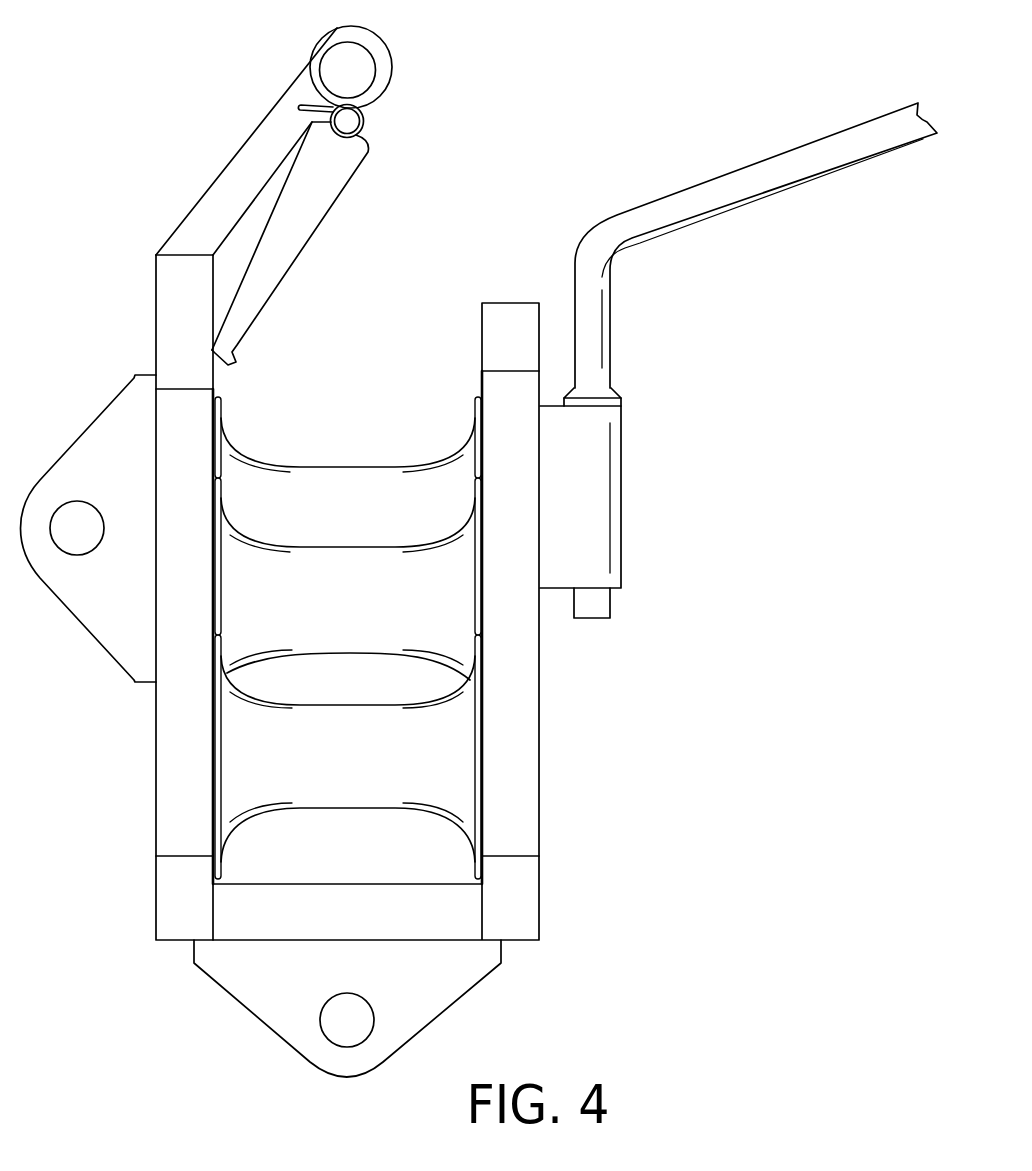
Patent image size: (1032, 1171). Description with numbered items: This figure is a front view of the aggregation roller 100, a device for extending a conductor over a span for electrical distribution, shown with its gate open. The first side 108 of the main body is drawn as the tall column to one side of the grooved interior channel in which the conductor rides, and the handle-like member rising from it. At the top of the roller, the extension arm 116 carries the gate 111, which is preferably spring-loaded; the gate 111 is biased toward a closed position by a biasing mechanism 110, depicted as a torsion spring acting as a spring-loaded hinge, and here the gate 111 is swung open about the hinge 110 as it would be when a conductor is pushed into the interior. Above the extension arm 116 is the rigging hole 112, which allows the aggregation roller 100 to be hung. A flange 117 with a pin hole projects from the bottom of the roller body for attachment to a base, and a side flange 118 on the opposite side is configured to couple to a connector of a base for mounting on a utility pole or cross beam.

The aggregation roller 100 is at (585, 50).
The first side 108 is at (522, 732).
The biasing mechanism 110 is at (352, 122).
The gate 111 is at (297, 245).
The rigging hole 112 is at (337, 70).
The extension arm 116 is at (207, 220).
The flange 117 is at (257, 990).
The side flange 118 is at (85, 593).